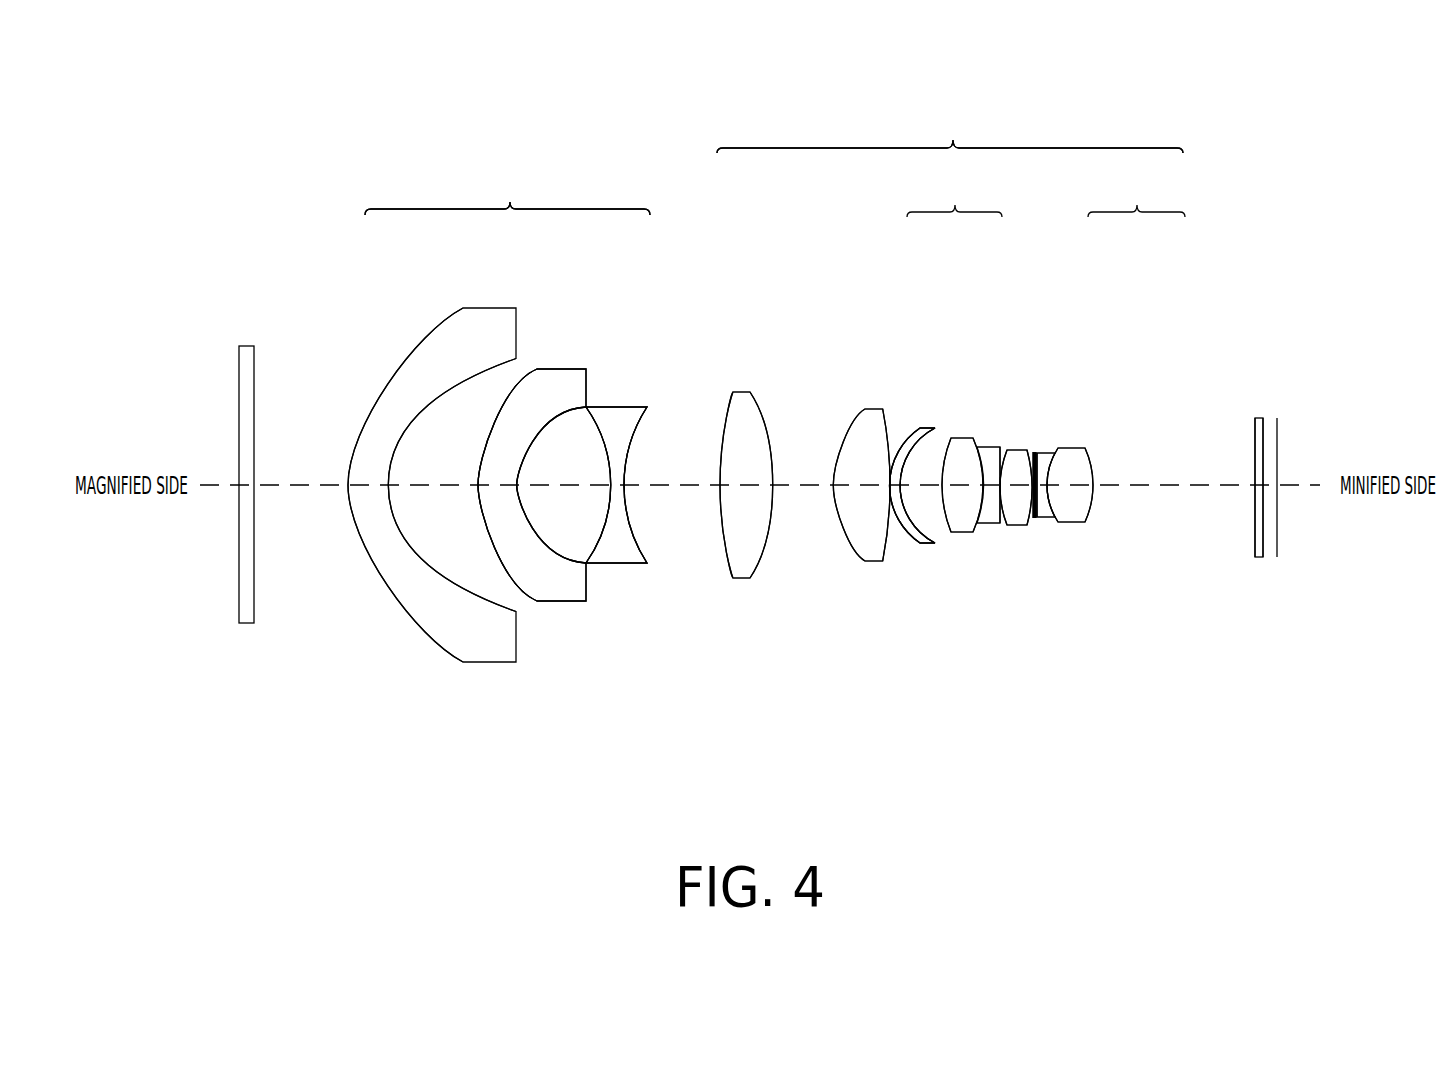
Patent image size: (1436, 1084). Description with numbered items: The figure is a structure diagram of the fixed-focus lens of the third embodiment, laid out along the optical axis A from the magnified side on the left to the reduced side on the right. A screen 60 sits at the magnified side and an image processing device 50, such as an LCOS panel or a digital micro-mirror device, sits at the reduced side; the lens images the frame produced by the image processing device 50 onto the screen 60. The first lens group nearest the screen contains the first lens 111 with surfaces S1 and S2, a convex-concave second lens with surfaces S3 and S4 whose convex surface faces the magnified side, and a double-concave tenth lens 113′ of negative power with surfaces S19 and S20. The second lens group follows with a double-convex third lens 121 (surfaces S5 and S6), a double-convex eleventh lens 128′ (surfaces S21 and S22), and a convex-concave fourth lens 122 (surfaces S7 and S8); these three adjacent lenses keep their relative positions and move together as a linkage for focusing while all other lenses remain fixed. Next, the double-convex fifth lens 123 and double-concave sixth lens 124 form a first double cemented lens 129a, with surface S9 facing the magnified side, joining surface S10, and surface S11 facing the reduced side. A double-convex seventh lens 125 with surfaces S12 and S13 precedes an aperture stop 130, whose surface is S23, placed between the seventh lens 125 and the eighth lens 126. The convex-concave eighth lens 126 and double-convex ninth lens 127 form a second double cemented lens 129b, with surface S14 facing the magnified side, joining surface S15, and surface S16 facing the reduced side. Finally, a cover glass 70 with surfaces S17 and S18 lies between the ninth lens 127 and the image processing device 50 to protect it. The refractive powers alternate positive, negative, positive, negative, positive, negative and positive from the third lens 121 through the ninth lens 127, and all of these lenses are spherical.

The first double cemented lens 129a is at (954, 188).
The second double cemented lens 129b is at (1136, 188).
The aperture stop 130 is at (1037, 516).
The optical axis A is at (648, 482).
The screen 60 is at (247, 583).
The cover glass 70 is at (1258, 448).
The image processing device 50 is at (1278, 537).
The first lens 111 is at (451, 352).
The tenth lens 113′ is at (616, 426).
The third lens 121 is at (741, 412).
The eleventh lens 128′ is at (866, 433).
The fourth lens 122 is at (917, 438).
The fifth lens 123 is at (960, 447).
The sixth lens 124 is at (990, 447).
The seventh lens 125 is at (1017, 460).
The eighth lens 126 is at (1045, 450).
The ninth lens 127 is at (1073, 467).
The surface S1 is at (393, 600).
The surface S2 is at (410, 543).
The surface S3 is at (495, 550).
The surface S4 is at (527, 515).
The surface S5 is at (722, 521).
The surface S6 is at (770, 528).
The surface S7 is at (910, 539).
The surface S8 is at (917, 516).
The surface S9 is at (940, 494).
The surface S10 is at (980, 463).
The surface S11 is at (1000, 512).
The surface S12 is at (1008, 499).
The surface S13 is at (1028, 500).
The surface S14 is at (1042, 507).
The surface S15 is at (1052, 503).
The surface S16 is at (1093, 495).
The surface S17 is at (1253, 523).
The surface S18 is at (1266, 503).
The surface S19 is at (605, 513).
The surface S20 is at (635, 532).
The surface S21 is at (835, 518).
The surface S22 is at (886, 548).
The surface S23 is at (1033, 466).